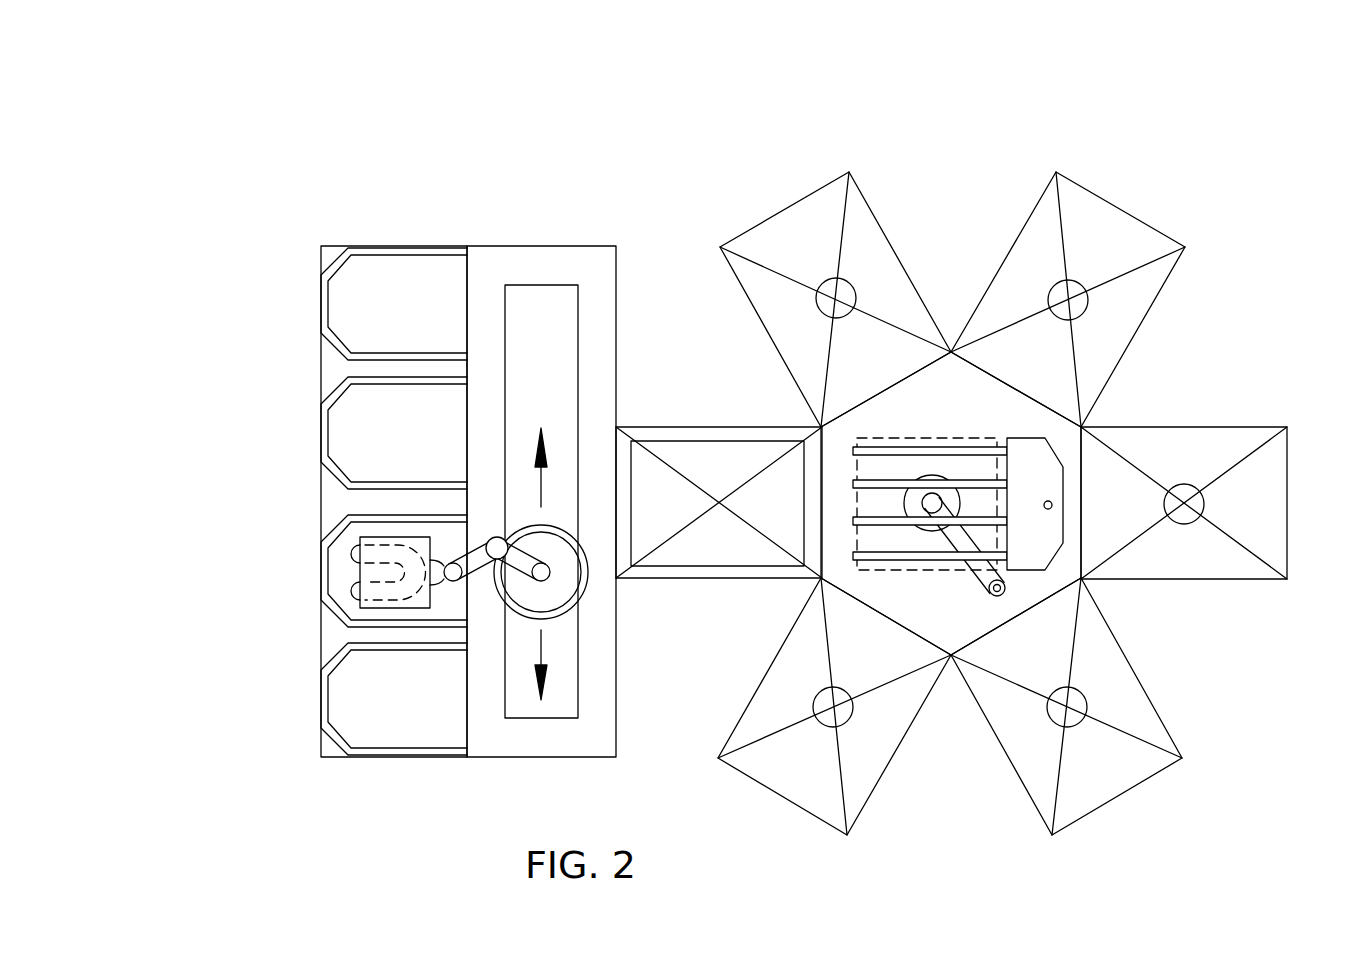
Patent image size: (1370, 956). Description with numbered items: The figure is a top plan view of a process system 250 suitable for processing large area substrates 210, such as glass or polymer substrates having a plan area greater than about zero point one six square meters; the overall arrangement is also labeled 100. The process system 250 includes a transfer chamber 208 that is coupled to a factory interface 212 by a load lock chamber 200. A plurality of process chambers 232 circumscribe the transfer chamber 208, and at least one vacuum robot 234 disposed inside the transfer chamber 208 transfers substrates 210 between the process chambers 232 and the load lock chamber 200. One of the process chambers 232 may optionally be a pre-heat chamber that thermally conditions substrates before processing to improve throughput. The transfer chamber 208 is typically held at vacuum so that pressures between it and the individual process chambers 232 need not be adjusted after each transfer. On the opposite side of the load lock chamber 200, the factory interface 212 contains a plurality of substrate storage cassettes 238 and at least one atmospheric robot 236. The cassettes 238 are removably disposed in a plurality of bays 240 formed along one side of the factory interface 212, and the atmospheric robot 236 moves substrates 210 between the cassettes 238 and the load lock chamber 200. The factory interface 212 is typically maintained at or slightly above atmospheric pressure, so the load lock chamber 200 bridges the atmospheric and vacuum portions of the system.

The substrate processing system 100 is at (665, 258).
The load lock chamber 200 is at (733, 580).
The transfer chamber 208 is at (953, 350).
The substrates 210 is at (380, 572).
The factory interface 212 is at (594, 243).
The process chambers 232 is at (785, 208).
The vacuum robot 234 is at (927, 475).
The atmospheric robot 236 is at (562, 523).
The substrate storage cassettes 238 is at (380, 733).
The bays 240 is at (320, 260).
The process system 250 is at (850, 53).